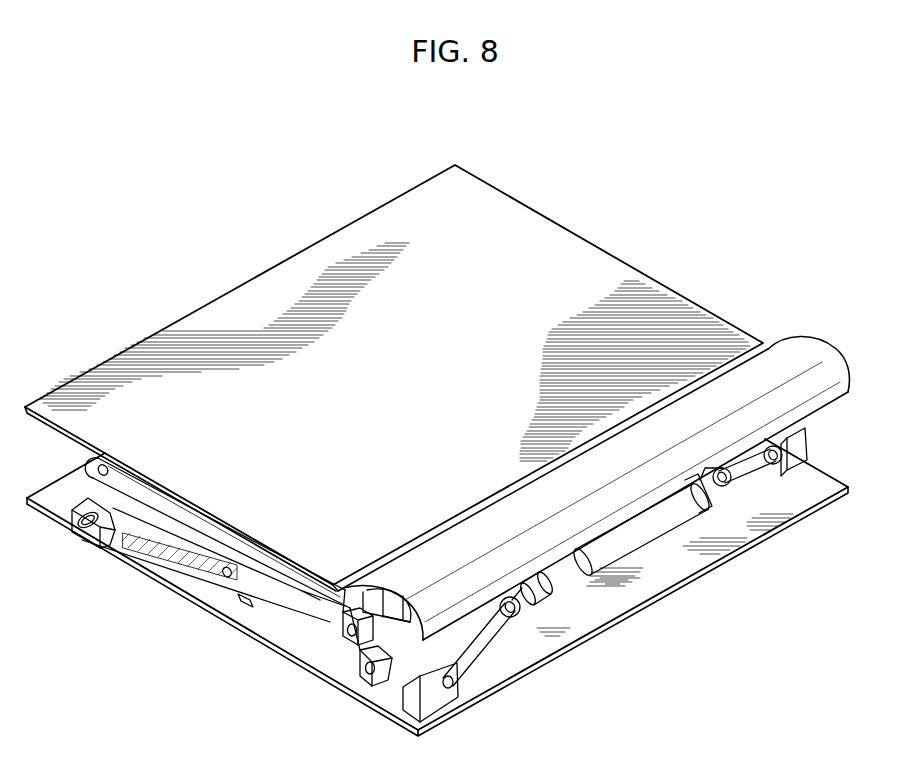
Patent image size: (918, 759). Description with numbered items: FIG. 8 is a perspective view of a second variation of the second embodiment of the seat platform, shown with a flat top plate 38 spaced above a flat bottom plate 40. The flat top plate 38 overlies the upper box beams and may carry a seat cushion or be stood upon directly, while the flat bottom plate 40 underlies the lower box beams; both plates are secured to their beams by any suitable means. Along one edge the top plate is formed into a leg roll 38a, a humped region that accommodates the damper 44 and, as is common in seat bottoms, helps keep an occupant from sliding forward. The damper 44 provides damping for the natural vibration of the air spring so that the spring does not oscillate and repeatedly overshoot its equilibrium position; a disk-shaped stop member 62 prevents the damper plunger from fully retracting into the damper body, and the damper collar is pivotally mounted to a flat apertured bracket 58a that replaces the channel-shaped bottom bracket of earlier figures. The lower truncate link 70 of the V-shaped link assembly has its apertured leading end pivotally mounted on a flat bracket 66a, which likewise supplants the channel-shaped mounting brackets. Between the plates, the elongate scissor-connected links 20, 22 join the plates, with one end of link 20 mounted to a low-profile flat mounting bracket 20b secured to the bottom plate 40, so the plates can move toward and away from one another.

The flat top plate 38 is at (434, 393).
The leg roll 38a is at (637, 488).
The flat bottom plate 40 is at (740, 523).
The damper 44 is at (627, 548).
The stop member 62 is at (550, 607).
The lower truncate link 70 is at (480, 644).
The flat bracket 58a is at (810, 442).
The flat bracket 66a is at (445, 705).
The low-profile flat mounting bracket 20b is at (95, 548).
The elongate scissor-connected link 20 is at (167, 556).
The elongate scissor-connected link 22 is at (325, 648).